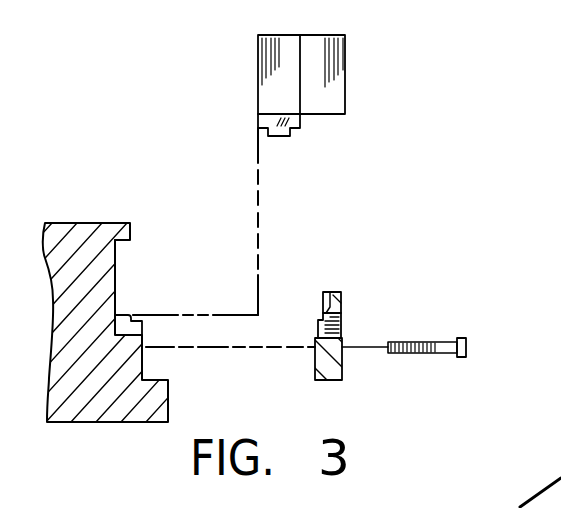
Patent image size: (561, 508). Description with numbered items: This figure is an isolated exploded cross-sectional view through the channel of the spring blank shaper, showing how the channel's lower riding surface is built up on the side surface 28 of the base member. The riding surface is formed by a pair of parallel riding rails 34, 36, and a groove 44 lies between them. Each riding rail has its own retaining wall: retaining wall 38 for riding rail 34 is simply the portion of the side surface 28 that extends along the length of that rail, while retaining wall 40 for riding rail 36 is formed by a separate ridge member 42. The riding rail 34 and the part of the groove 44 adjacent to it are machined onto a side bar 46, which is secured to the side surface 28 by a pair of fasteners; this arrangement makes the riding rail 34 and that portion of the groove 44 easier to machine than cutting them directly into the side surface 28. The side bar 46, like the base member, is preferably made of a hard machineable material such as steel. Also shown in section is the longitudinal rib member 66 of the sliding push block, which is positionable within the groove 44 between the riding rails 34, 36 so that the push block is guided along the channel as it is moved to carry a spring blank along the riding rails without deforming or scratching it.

The side surface 28 is at (118, 243).
The retaining wall 38 is at (117, 275).
The riding rail 34 is at (122, 313).
The groove 44 is at (147, 320).
The longitudinal rib member 66 is at (283, 136).
The retaining wall 40 is at (329, 292).
The riding rail 36 is at (323, 301).
The ridge member 42 is at (341, 297).
The side bar 46 is at (343, 381).